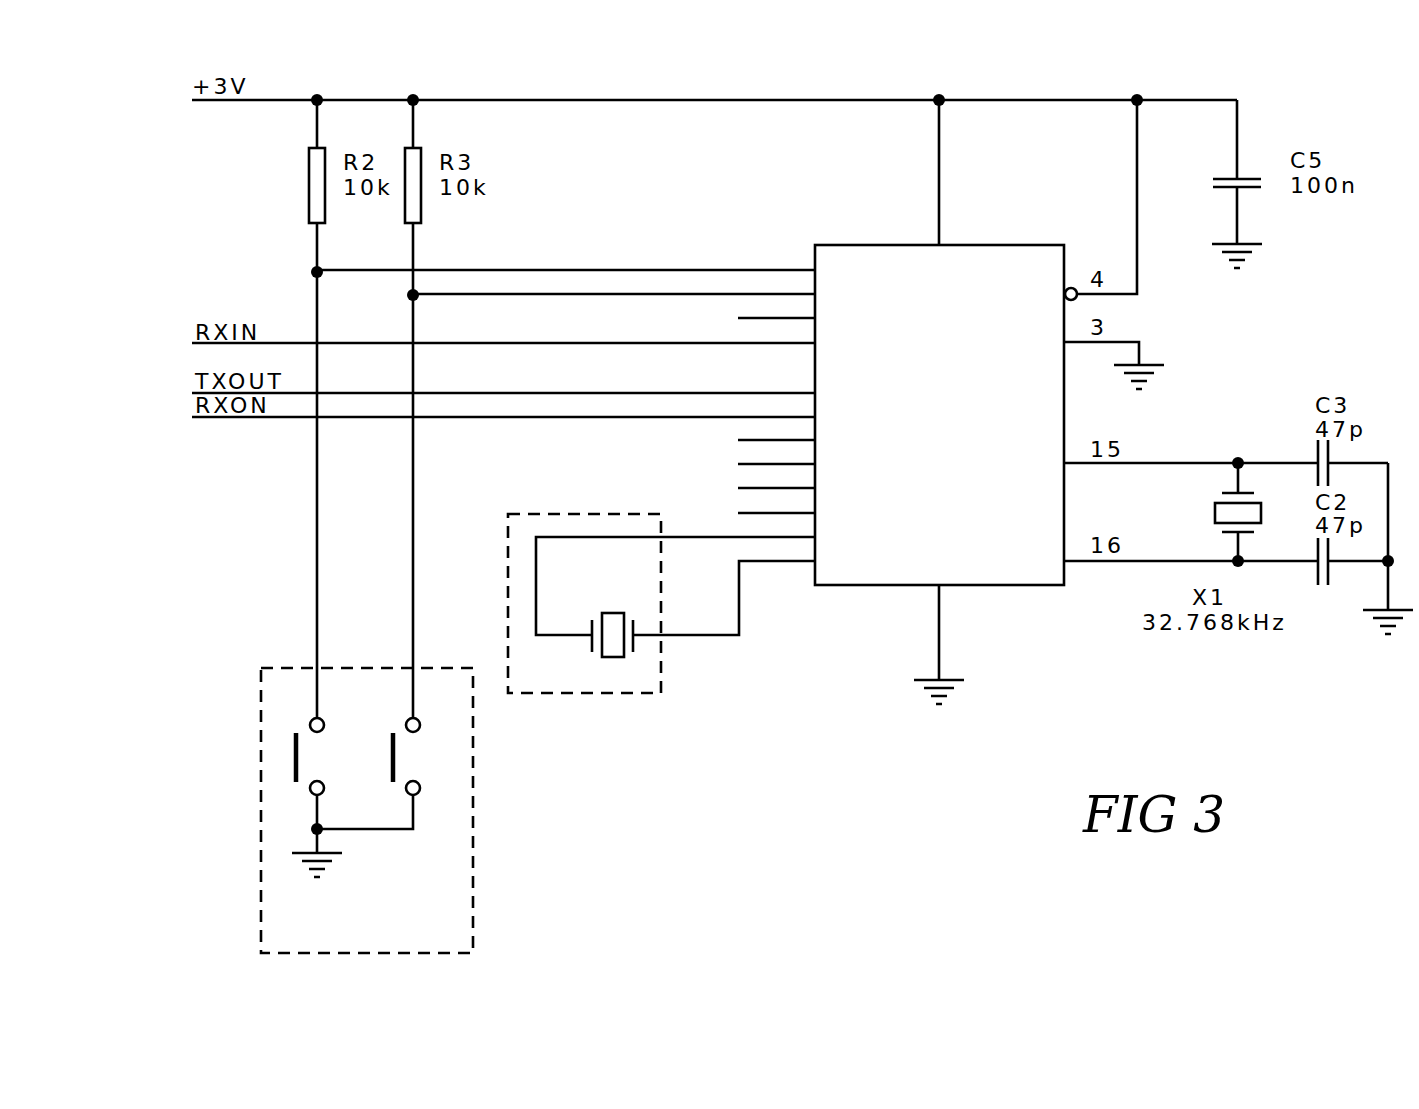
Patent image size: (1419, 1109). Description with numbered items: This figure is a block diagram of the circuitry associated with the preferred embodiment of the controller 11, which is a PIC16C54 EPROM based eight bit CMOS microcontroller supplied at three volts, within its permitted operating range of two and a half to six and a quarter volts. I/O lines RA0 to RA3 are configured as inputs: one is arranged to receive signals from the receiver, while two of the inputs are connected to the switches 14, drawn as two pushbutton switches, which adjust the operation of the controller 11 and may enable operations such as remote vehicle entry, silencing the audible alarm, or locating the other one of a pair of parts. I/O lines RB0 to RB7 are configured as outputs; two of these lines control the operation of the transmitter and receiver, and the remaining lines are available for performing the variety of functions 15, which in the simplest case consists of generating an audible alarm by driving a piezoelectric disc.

The controller 11 is at (897, 396).
The switches 14 is at (450, 867).
The functions 15 is at (650, 680).